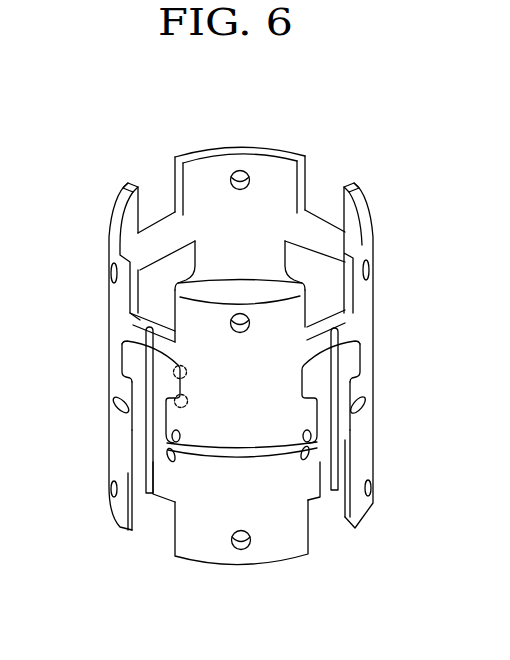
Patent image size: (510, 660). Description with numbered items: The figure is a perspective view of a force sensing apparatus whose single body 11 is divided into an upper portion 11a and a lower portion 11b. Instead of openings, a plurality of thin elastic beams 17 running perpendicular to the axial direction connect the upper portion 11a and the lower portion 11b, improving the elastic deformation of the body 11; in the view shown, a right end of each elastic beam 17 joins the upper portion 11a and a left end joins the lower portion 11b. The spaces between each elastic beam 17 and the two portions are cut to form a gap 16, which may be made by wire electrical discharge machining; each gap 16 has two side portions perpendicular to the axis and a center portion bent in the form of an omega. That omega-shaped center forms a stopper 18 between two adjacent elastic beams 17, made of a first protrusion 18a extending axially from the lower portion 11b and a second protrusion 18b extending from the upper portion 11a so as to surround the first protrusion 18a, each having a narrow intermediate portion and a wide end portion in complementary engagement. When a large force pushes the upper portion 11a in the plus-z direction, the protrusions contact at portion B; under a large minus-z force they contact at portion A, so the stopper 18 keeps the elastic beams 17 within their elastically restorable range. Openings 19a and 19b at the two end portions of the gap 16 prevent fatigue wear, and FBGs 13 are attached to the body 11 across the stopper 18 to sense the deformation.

The body 11 is at (362, 221).
The upper portion 11a is at (298, 311).
The lower portion 11b is at (292, 552).
The FBG 13 is at (148, 462).
The gap 16 is at (215, 458).
The elastic beam 17 is at (262, 458).
The stopper 18 is at (196, 387).
The first protrusion 18a is at (122, 352).
The second protrusion 18b is at (122, 390).
The opening 19a is at (175, 463).
The opening 19b is at (316, 478).
The portion A is at (172, 367).
The portion B is at (178, 401).